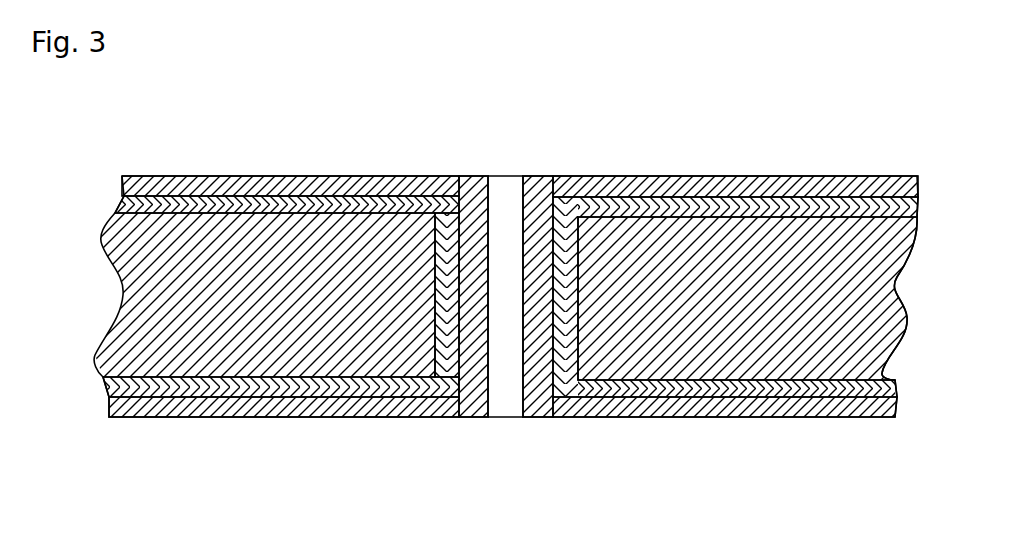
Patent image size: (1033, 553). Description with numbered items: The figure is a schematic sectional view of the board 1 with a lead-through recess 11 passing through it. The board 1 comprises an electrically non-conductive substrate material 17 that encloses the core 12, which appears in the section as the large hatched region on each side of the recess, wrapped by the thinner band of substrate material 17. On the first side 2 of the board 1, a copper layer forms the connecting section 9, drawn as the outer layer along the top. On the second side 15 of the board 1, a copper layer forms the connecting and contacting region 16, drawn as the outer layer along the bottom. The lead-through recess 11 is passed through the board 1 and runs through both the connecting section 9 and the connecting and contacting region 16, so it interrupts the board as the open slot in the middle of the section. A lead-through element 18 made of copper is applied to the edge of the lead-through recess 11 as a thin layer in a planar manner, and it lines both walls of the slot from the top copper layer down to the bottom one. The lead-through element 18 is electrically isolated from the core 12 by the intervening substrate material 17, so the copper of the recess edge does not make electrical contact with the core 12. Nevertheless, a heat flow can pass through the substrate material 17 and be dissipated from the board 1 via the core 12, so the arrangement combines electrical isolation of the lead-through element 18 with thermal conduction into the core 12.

The board 1 is at (885, 150).
The first side 2 is at (306, 178).
The connecting section 9 is at (705, 177).
The lead-through recess 11 is at (510, 195).
The core 12 is at (192, 355).
The second side 15 is at (327, 417).
The connecting and contacting region 16 is at (750, 405).
The substrate material 17 is at (235, 206).
The lead-through element 18 is at (470, 395).